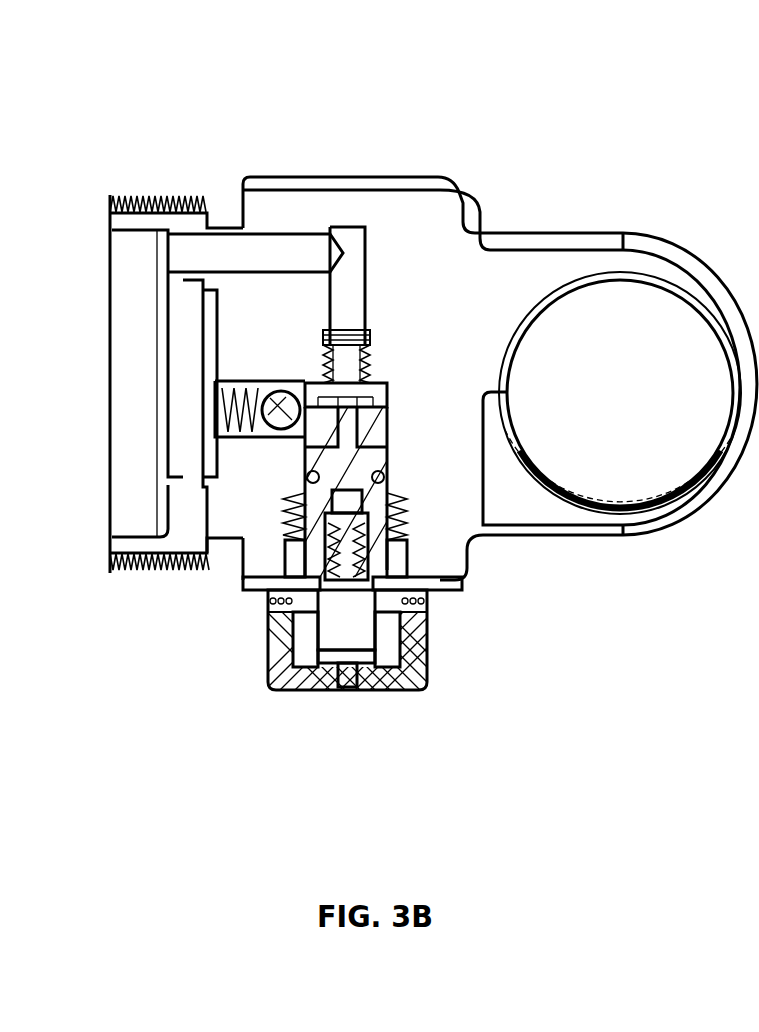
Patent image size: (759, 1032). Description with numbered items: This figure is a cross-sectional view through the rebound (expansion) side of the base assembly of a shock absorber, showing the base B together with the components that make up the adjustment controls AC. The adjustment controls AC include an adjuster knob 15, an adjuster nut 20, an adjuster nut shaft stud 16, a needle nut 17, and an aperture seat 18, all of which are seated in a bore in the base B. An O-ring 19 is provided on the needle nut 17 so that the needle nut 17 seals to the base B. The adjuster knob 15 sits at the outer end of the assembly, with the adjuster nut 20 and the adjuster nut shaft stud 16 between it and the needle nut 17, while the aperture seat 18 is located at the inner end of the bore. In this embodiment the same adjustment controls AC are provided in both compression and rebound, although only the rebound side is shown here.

The base B is at (487, 290).
The adjuster knob 15 is at (407, 647).
The adjuster nut shaft stud 16 is at (428, 598).
The needle nut 17 is at (338, 463).
The aperture seat 18 is at (338, 383).
The O-ring 19 is at (295, 483).
The adjuster nut 20 is at (290, 585).
The adjustment controls AC is at (250, 670).